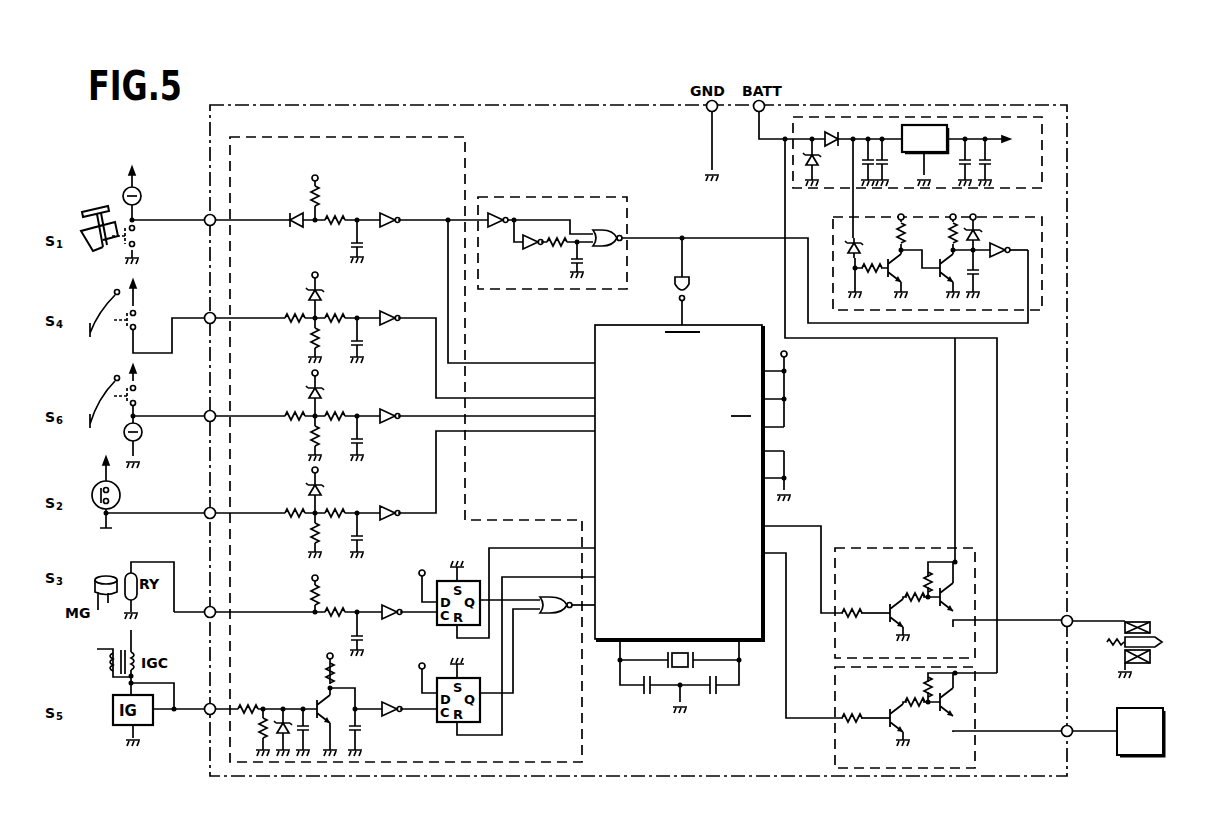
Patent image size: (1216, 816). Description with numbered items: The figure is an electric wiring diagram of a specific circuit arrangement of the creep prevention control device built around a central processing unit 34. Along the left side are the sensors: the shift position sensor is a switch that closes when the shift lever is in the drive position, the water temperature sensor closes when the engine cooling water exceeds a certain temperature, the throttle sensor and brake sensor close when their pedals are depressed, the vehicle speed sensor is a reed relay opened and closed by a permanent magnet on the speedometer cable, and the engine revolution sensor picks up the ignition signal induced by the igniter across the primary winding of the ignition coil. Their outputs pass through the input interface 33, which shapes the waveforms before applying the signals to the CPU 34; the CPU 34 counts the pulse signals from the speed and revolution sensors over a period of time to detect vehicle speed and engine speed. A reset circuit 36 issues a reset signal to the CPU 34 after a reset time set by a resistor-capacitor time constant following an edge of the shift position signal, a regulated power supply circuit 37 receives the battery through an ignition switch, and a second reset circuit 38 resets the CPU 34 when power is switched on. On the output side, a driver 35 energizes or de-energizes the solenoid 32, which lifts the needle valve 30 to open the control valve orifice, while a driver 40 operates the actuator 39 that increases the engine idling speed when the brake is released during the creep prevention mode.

The needle valve 30 is at (1162, 642).
The solenoid 32 is at (1140, 619).
The input interface 33 is at (472, 154).
The central processing unit 34 is at (591, 487).
The driver 35 is at (882, 539).
The reset circuit 36 is at (562, 188).
The regulated power supply circuit 37 is at (1045, 149).
The reset circuit 38 is at (1045, 245).
The actuator 39 is at (1157, 747).
The driver 40 is at (984, 707).